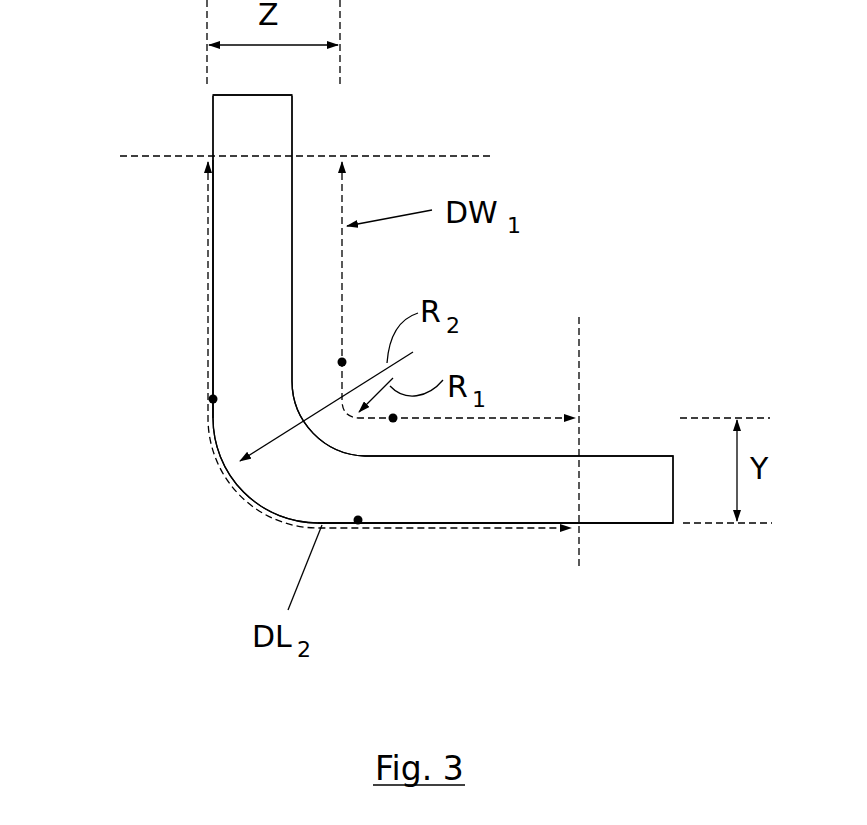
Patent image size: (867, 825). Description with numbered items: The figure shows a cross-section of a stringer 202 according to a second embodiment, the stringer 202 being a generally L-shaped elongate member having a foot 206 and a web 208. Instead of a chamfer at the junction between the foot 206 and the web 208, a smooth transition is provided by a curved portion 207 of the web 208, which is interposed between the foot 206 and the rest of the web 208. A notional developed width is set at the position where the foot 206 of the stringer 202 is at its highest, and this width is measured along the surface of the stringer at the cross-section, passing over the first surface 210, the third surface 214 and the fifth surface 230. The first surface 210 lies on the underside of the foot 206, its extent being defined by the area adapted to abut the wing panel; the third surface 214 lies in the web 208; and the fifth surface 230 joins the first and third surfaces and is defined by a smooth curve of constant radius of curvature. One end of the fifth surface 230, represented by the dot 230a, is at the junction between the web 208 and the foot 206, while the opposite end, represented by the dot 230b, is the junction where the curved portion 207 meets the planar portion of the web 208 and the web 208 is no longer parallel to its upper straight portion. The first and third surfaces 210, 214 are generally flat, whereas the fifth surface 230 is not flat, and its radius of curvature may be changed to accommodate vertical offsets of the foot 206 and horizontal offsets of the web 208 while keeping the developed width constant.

The stringer 202 is at (290, 493).
The foot 206 is at (640, 492).
The curved portion 207 is at (242, 428).
The web 208 is at (240, 293).
The first surface 210 is at (526, 534).
The third surface 214 is at (210, 217).
The fifth surface 230 is at (236, 491).
The end of fifth surface 230a is at (360, 522).
The opposite end of fifth surface 230b is at (211, 398).